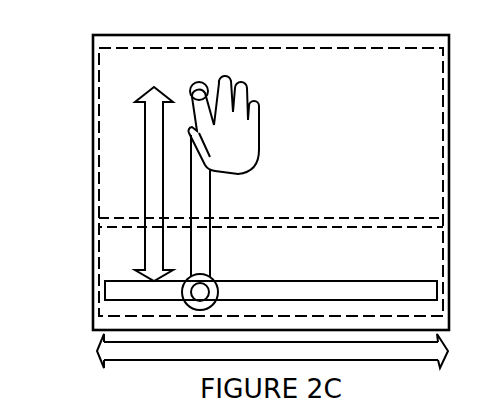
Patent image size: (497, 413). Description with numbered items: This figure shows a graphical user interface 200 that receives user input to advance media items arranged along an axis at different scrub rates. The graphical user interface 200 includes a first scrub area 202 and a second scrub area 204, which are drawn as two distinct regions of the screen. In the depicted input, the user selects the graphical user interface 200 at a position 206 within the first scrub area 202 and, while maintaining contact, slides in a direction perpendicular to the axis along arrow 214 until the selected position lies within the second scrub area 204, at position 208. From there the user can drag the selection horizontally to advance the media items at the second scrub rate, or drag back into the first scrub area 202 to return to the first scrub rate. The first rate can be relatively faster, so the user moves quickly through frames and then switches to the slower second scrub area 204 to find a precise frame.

The graphical user interface 200 is at (93, 36).
The first scrub area 202 is at (98, 262).
The second scrub area 204 is at (93, 103).
The position 206 is at (184, 287).
The position 208 is at (190, 92).
The arrow 214 is at (93, 204).